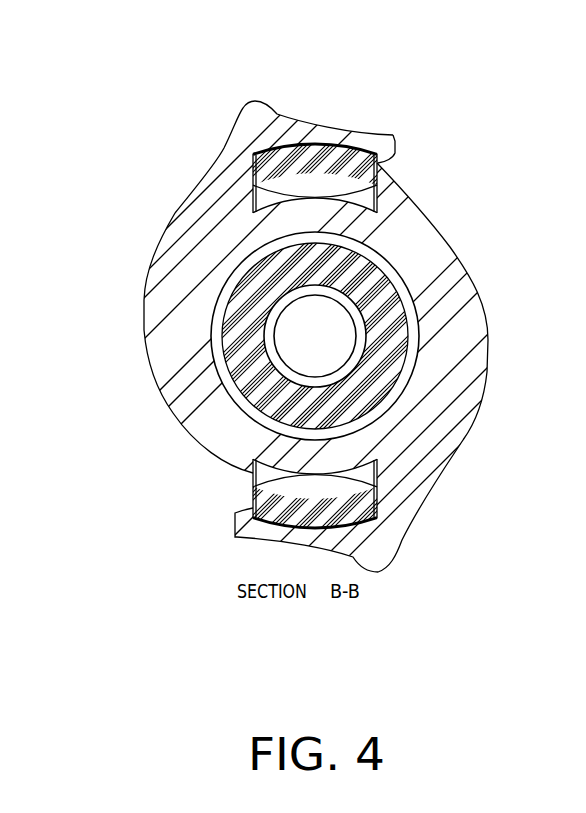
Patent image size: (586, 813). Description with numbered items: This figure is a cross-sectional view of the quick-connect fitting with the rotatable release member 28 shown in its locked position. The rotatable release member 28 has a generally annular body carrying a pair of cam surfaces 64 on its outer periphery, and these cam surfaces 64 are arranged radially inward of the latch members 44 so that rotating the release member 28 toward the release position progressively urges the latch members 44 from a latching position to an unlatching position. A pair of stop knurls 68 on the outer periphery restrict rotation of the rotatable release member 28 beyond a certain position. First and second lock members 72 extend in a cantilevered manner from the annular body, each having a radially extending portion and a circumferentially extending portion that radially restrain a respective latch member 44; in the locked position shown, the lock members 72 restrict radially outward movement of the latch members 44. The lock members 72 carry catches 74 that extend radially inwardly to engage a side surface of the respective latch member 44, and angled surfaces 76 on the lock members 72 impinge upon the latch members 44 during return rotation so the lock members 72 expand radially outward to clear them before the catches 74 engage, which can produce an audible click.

The rotatable release member 28 is at (136, 338).
The latch members 44 is at (340, 143).
The cam surfaces 64 is at (463, 272).
The stop knurls 68 is at (268, 100).
The lock members 72 is at (298, 130).
The catches 74 is at (383, 170).
The angled surfaces 76 is at (388, 158).